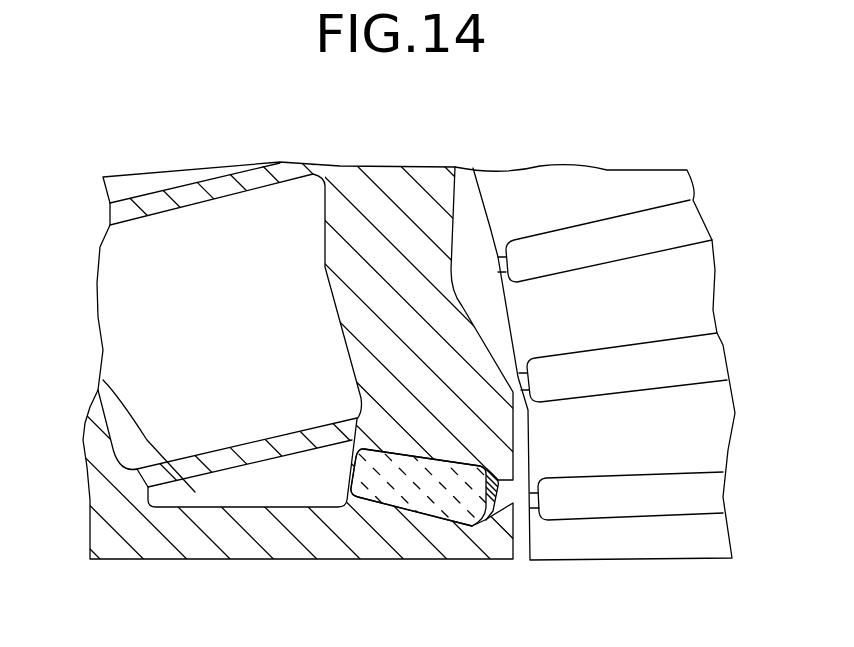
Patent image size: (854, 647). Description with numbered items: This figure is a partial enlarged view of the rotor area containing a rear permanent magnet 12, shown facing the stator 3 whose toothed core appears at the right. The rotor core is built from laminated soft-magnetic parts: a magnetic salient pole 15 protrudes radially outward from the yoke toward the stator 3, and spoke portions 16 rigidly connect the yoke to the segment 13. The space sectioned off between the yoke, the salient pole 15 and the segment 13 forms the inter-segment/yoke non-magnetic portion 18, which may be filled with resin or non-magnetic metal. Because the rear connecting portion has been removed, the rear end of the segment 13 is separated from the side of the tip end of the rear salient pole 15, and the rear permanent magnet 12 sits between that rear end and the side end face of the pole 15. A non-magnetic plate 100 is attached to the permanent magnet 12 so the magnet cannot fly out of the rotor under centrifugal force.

The stator 3 is at (600, 143).
The rear permanent magnet 12 is at (417, 493).
The segment 13 is at (377, 197).
The magnetic salient pole 15 is at (220, 530).
The spoke portion 16 is at (158, 207).
The inter-segment/yoke non-magnetic portion 18 is at (147, 343).
The non-magnetic plate 100 is at (495, 508).